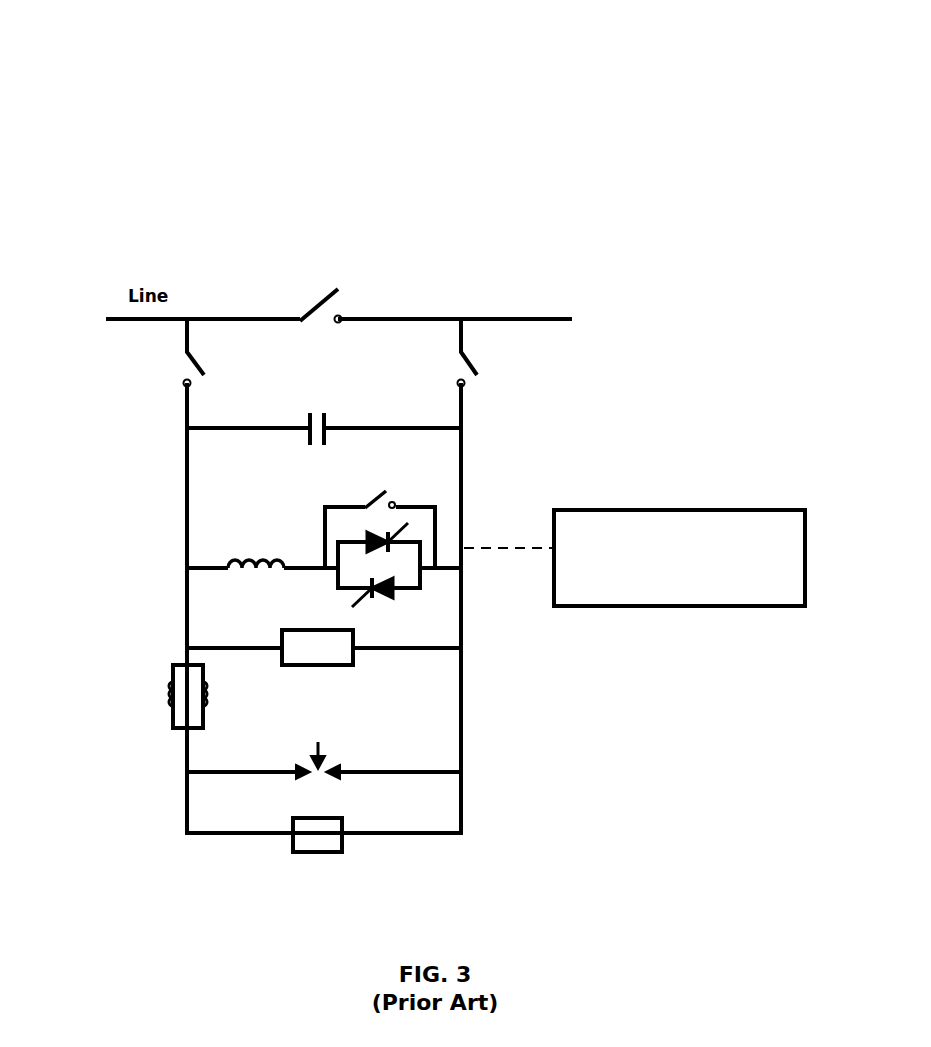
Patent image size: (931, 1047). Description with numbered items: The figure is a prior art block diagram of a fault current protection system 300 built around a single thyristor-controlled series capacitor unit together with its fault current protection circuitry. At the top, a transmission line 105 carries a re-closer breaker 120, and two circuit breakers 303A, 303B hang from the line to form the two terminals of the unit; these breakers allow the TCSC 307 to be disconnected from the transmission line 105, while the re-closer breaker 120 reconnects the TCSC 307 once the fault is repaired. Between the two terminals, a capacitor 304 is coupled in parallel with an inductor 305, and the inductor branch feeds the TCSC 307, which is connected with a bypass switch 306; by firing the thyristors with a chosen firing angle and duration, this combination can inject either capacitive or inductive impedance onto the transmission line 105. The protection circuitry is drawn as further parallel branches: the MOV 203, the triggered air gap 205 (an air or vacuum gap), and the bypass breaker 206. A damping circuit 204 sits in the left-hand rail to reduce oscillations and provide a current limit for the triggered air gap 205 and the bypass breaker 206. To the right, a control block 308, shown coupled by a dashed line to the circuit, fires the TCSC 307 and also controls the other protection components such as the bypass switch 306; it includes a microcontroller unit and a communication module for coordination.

The fault current protection system 300 is at (313, 85).
The transmission line 105 is at (500, 319).
The re-closer breaker 120 is at (342, 298).
The circuit breaker 303A is at (186, 375).
The circuit breaker 303B is at (469, 385).
The capacitor 304 is at (325, 405).
The inductor 305 is at (270, 553).
The bypass switch 306 is at (395, 503).
The TCSC 307 is at (395, 583).
The control block 308 is at (680, 608).
The MOV 203 is at (350, 662).
The damping circuit 204 is at (190, 701).
The triggered air gap 205 is at (318, 778).
The bypass breaker 206 is at (325, 852).